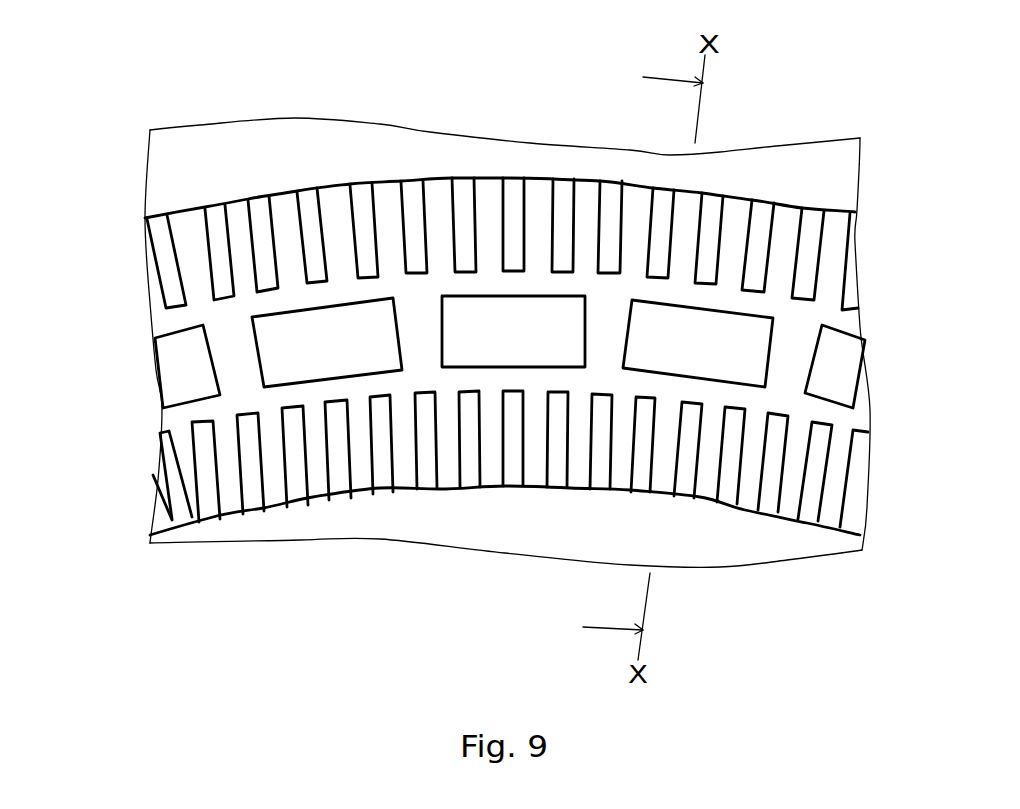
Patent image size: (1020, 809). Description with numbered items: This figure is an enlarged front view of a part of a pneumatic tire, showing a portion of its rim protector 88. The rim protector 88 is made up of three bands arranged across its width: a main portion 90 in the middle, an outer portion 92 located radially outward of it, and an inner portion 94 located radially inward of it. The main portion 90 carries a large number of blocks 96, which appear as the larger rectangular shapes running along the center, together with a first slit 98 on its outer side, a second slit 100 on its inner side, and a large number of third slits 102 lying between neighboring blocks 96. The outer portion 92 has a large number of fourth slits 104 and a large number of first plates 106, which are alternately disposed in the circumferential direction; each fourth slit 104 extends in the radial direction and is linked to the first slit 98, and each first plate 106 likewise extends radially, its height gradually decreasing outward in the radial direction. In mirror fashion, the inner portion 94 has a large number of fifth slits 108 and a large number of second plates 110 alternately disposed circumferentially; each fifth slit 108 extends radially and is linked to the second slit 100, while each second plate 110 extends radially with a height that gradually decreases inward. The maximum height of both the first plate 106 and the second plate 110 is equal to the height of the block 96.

The rim protector 88 is at (820, 197).
The main portion 90 is at (451, 472).
The outer portion 92 is at (448, 170).
The inner portion 94 is at (453, 519).
The block 96 is at (188, 380).
The first slit 98 is at (490, 283).
The second slit 100 is at (487, 380).
The third slit 102 is at (233, 355).
The fourth slit 104 is at (187, 235).
The first plate 106 is at (263, 217).
The fifth slit 108 is at (282, 485).
The second plate 110 is at (222, 497).